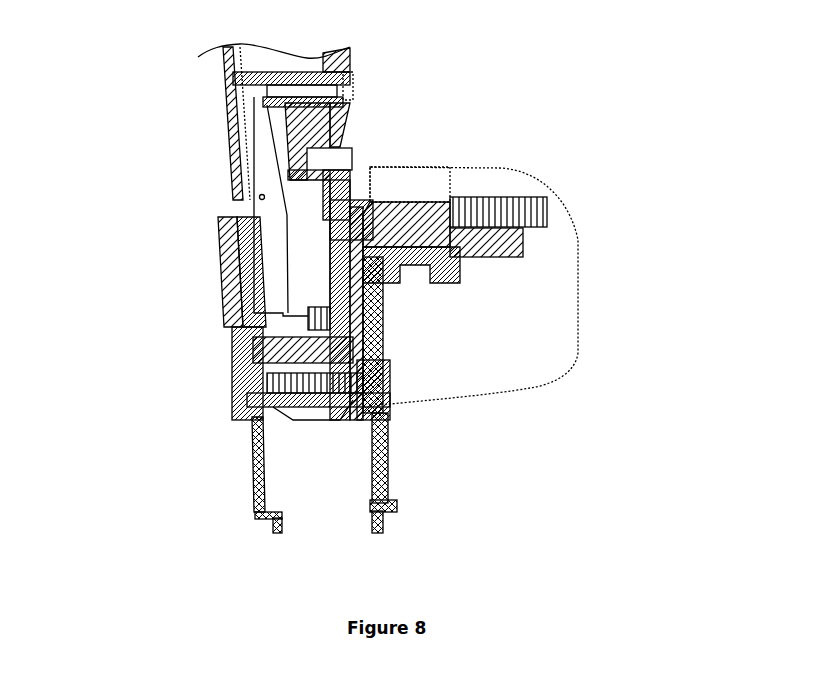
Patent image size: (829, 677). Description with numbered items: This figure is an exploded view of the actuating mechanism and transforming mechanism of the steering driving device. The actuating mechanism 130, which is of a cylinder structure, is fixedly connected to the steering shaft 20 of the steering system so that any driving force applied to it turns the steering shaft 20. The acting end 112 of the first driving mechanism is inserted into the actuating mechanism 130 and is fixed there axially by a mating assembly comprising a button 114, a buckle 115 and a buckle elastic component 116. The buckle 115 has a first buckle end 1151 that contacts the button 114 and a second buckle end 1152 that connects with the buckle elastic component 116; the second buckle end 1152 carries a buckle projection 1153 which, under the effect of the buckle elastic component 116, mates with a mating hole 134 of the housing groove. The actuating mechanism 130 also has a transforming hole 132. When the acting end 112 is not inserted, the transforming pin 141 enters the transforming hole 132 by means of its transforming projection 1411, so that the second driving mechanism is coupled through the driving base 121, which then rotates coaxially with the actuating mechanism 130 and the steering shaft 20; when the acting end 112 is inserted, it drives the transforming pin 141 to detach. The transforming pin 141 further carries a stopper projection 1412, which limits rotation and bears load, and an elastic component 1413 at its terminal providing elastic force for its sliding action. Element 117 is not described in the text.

The steering shaft 20 is at (250, 476).
The acting end 112 is at (338, 183).
The button 114 is at (352, 93).
The buckle 115 is at (258, 211).
The buckle elastic component 116 is at (373, 353).
The support leg 117 is at (380, 367).
The driving base 121 is at (557, 270).
The actuating mechanism 130 is at (240, 290).
The transforming hole 132 is at (342, 190).
The mating hole 134 is at (273, 330).
The transforming pin 141 is at (478, 242).
The first buckle end 1151 is at (283, 140).
The second buckle end 1152 is at (268, 335).
The buckle projection 1153 is at (250, 340).
The transforming projection 1411 is at (368, 210).
The stopper projection 1412 is at (363, 250).
The elastic component 1413 is at (542, 187).